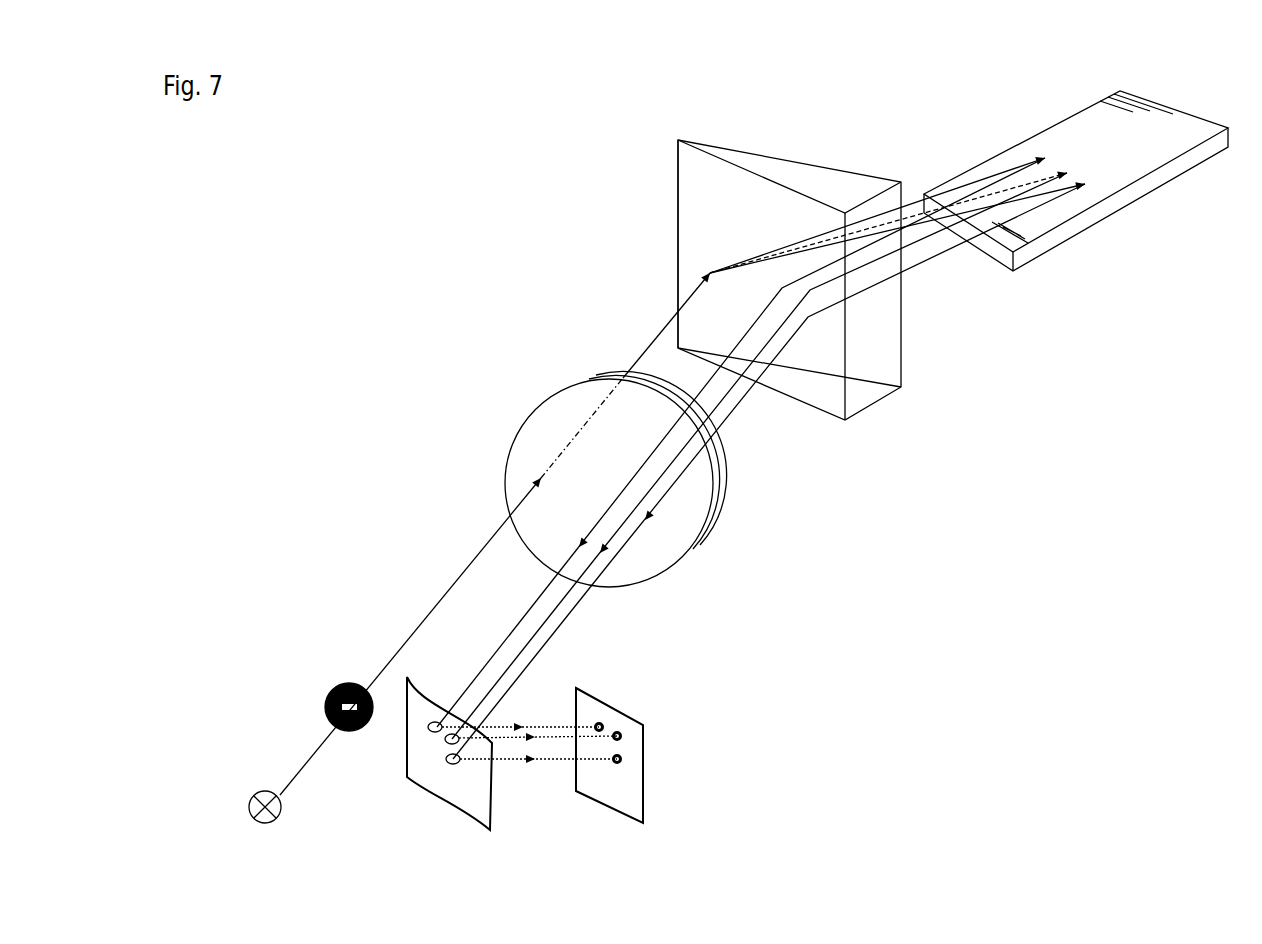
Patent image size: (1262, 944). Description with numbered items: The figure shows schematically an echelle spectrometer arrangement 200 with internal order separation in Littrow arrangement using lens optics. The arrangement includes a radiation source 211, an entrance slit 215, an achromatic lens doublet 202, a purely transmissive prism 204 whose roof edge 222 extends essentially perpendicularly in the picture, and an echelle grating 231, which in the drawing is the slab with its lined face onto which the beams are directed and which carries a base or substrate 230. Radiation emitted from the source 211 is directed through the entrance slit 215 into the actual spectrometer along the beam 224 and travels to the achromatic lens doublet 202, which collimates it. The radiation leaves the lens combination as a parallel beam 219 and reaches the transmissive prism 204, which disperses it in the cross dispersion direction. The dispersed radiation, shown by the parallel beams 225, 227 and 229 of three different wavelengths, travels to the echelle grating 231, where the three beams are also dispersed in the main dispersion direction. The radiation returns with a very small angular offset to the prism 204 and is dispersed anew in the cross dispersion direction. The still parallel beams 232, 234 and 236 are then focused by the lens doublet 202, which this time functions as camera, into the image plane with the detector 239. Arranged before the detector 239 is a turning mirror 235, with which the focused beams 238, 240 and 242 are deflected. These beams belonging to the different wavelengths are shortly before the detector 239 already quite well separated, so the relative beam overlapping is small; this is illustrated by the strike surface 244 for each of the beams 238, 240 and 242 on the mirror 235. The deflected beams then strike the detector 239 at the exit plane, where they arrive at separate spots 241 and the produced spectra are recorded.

The spectrometer arrangement 200 is at (1027, 479).
The achromatic lens doublet 202 is at (535, 412).
The purely transmissive prism 204 is at (749, 256).
The radiation source 211 is at (267, 790).
The entrance slit 215 is at (323, 700).
The parallel beam 219 is at (653, 342).
The roof edge 222 is at (677, 170).
The illumination light beam 224 is at (448, 588).
The parallel beam 225 is at (762, 245).
The parallel beam 227 is at (818, 242).
The parallel beam 229 is at (875, 238).
The sensor / detector array 230 is at (1076, 150).
The echelle grating 231 is at (1220, 152).
The parallel beam 232 is at (743, 335).
The parallel beam 234 is at (736, 393).
The parallel beam 236 is at (733, 418).
The turning mirror 235 is at (445, 775).
The focused beam 238 is at (485, 665).
The detector 239 is at (550, 780).
The focused beam 240 is at (565, 603).
The detection points 241 is at (618, 732).
The focused beam 242 is at (623, 548).
The strike surface 244 is at (432, 733).